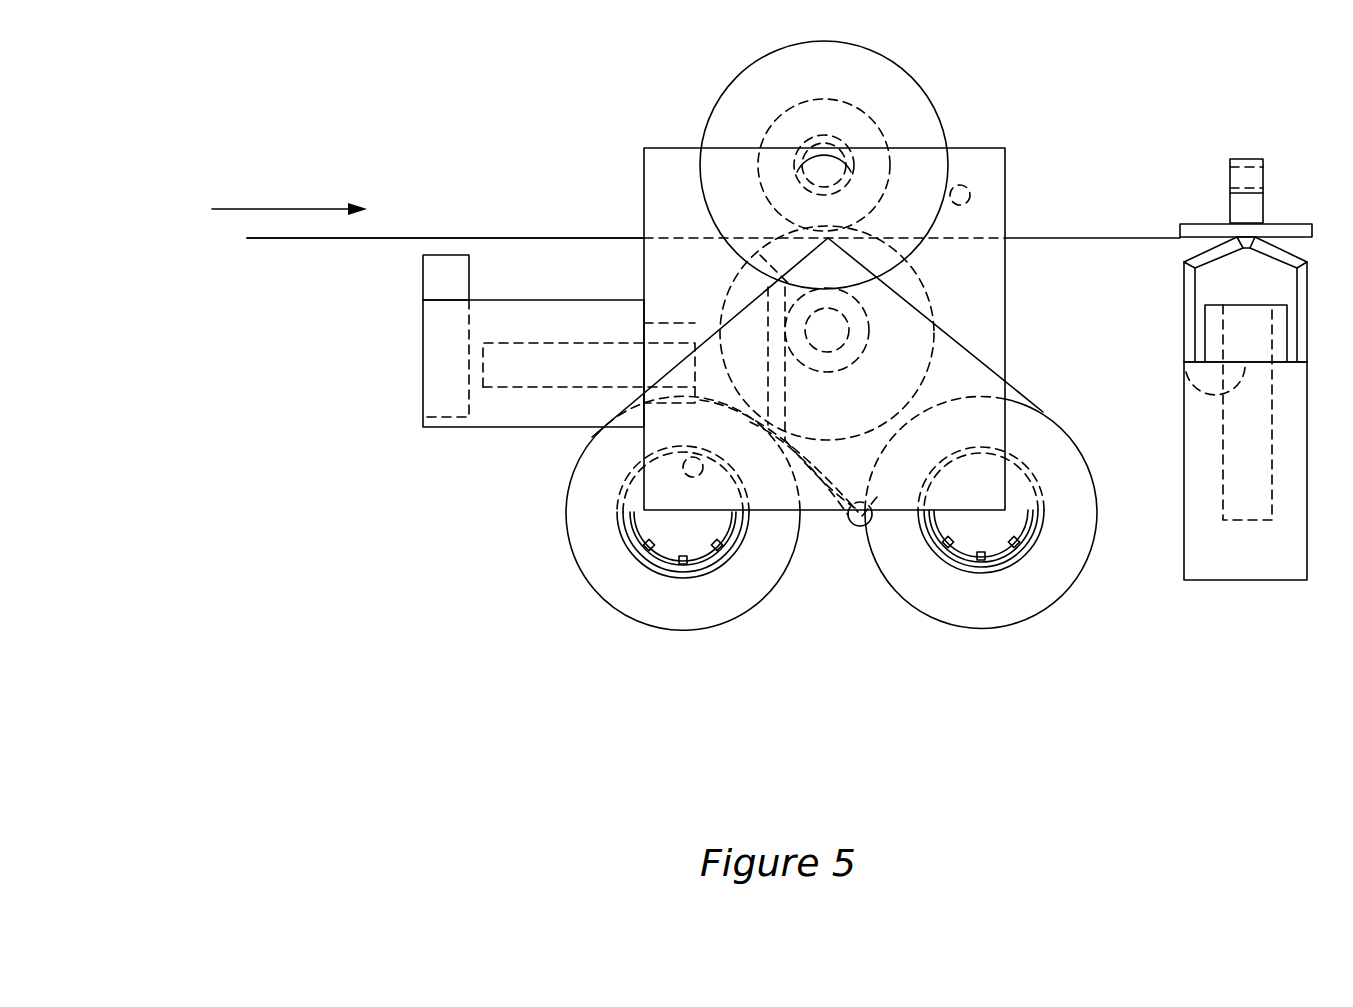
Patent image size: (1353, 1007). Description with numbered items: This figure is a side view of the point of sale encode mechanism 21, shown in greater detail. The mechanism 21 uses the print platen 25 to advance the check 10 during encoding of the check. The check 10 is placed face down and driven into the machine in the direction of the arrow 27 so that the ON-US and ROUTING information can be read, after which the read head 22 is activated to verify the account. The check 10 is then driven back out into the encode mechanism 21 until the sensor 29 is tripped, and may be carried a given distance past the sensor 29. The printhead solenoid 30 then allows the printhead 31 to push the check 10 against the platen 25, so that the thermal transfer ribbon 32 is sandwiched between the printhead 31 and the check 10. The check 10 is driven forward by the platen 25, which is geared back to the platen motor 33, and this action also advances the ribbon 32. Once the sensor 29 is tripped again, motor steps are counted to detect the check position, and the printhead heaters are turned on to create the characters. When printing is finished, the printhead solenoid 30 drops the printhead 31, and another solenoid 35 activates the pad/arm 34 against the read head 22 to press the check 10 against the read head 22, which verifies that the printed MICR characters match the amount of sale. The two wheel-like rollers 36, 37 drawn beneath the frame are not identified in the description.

The web 10 is at (503, 238).
The cutting apparatus 21 is at (272, 556).
The anvil assembly 22 is at (1183, 313).
The drive roller 25 is at (837, 98).
The web travel direction arrow 27 is at (287, 208).
The motor mount block 29 is at (422, 285).
The motor housing 30 is at (517, 427).
The tension roller 31 is at (817, 485).
The support arm 32 is at (955, 337).
The frame plate 33 is at (660, 148).
The anvil post 34 is at (1253, 158).
The anvil cylinder 35 is at (1213, 582).
The left wheel 36 is at (683, 513).
The right wheel 37 is at (981, 512).